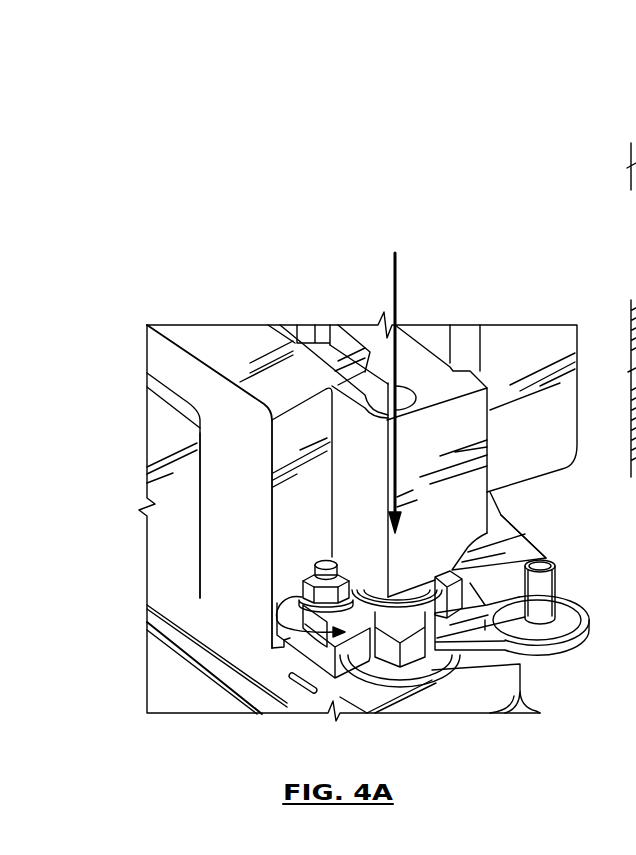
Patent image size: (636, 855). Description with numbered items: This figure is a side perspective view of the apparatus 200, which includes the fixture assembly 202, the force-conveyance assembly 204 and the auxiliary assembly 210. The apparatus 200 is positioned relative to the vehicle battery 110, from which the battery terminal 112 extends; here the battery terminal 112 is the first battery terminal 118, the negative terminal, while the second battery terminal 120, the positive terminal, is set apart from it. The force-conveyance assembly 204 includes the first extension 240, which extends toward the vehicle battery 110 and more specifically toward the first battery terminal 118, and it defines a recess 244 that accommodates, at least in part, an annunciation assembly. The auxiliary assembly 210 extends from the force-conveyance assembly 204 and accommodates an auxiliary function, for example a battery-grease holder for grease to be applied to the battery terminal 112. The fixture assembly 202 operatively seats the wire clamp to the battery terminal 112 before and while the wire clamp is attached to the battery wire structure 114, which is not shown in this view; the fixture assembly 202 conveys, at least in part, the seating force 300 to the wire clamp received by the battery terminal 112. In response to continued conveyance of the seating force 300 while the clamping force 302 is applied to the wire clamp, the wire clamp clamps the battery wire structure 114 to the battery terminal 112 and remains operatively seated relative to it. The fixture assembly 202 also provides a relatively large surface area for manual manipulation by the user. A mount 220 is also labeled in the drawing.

The apparatus 200 is at (242, 110).
The fixture assembly 202 is at (234, 212).
The force-conveyance assembly 204 is at (250, 357).
The recess 244 is at (342, 341).
The seating force 300 is at (397, 297).
The auxiliary assembly 210 is at (517, 340).
The battery wire structure 114 is at (635, 133).
The first extension 240 is at (233, 465).
The clamping force 302 is at (284, 619).
The vehicle battery 110 is at (173, 683).
The first battery terminal 118 is at (415, 575).
The battery terminal 112 is at (520, 746).
The second battery terminal 120 is at (563, 657).
The mount 220 is at (633, 235).